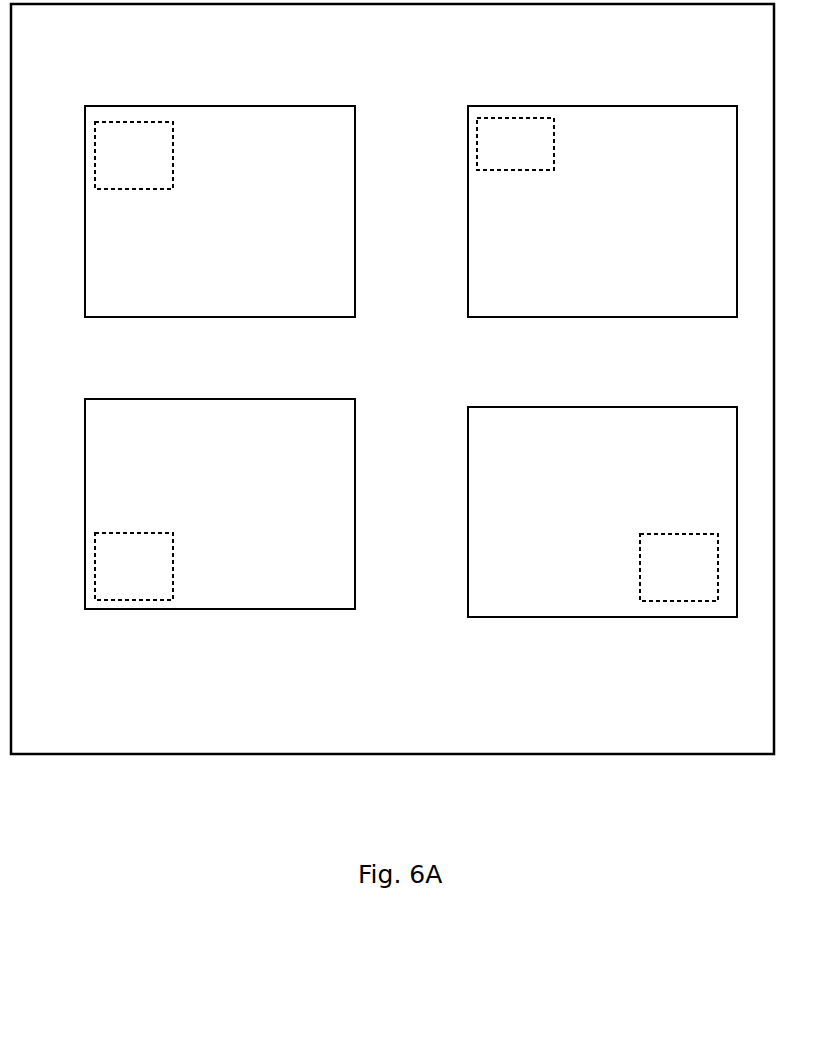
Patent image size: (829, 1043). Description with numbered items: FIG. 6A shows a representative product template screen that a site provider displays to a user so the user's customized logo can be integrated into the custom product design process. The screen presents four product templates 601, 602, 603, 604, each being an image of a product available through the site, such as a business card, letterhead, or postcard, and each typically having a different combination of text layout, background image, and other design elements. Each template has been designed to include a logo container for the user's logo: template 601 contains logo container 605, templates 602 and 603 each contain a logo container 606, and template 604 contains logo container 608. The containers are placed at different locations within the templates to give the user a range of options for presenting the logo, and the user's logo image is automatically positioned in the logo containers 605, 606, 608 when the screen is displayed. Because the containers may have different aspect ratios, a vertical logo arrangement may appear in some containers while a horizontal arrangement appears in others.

The product template 601 is at (230, 94).
The product template 602 is at (612, 94).
The product template 603 is at (228, 386).
The product template 604 is at (614, 396).
The logo container 605 is at (138, 106).
The logo container 606 is at (522, 102).
The logo container 608 is at (667, 611).